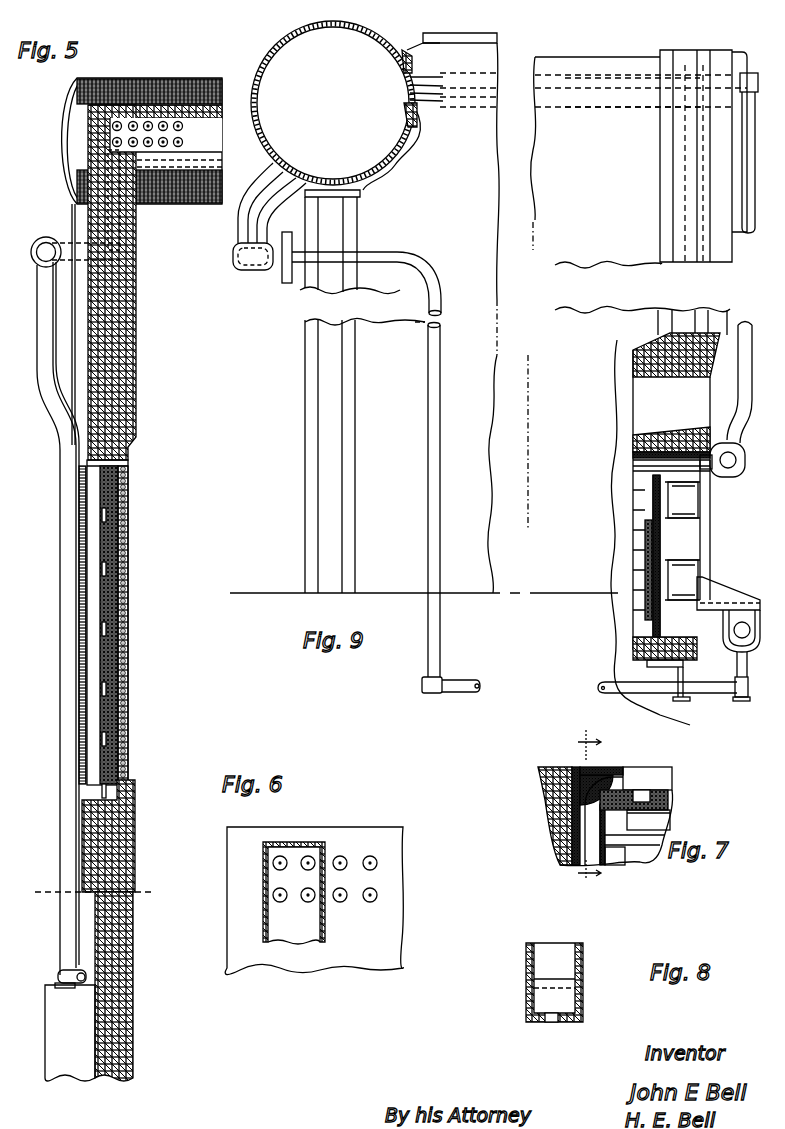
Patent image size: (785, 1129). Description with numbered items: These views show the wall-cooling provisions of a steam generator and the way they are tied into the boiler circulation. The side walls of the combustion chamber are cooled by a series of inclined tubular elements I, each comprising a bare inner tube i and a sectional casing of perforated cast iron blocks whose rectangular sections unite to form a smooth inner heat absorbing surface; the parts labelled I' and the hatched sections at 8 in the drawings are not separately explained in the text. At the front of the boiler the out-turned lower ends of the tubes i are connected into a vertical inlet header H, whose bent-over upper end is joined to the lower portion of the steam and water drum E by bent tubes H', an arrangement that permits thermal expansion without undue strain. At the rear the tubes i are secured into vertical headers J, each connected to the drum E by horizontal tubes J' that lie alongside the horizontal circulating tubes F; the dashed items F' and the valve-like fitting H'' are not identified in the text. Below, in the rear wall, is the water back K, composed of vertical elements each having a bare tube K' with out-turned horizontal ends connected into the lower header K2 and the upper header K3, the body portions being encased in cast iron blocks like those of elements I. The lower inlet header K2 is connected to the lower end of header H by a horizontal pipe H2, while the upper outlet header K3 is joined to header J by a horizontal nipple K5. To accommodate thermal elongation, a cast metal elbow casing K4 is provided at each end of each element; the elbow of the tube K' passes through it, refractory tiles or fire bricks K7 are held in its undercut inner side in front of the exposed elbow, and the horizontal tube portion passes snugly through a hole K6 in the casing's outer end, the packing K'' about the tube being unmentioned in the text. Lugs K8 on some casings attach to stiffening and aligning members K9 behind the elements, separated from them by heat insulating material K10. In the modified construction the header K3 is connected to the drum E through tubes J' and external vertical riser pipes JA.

In FIG. 9, the steam and water drum E is at (333, 103).
In FIG. 6, the steam and water drum E is at (356, 827).
In FIG. 6, the horizontal circulating tubes F is at (355, 867).
In FIG. 5, the tube holes F' is at (180, 96).
In FIG. 9, the tube holes F' is at (632, 133).
In FIG. 6, the vertical header J is at (277, 894).
In FIG. 5, the horizontal tubes J' is at (71, 136).
In FIG. 9, the horizontal tubes J' is at (632, 113).
In FIG. 6, the horizontal tubes J' is at (271, 879).
In FIG. 5, the vertical inlet header H is at (50, 606).
In FIG. 9, the vertical inlet header H is at (451, 508).
In FIG. 5, the tubes H' is at (112, 297).
In FIG. 9, the valve H'' is at (232, 258).
In FIG. 5, the horizontal pipe H2 is at (58, 975).
In FIG. 9, the horizontal pipe H2 is at (714, 696).
In FIG. 5, the tubular elements I is at (128, 629).
In FIG. 5, the grid strip I' is at (48, 625).
In FIG. 5, the inner tube i is at (124, 536).
In FIG. 7, the inner tube i is at (612, 770).
In FIG. 9, the external vertical riser pipes JA is at (733, 412).
In FIG. 9, the water back K is at (644, 563).
In FIG. 7, the water back K is at (647, 765).
In FIG. 7, the bare tube K' is at (542, 816).
In FIG. 7, the packing K'' is at (557, 820).
In FIG. 9, the lower horizontal header K2 is at (735, 645).
In FIG. 9, the upper horizontal header K3 is at (728, 470).
In FIG. 7, the cast metal elbow casing K4 is at (572, 768).
In FIG. 8, the cast metal elbow casing K4 is at (583, 988).
In FIG. 8, the horizontal nipple or pipe connection K5 is at (557, 1022).
In FIG. 8, the hole K6 is at (554, 968).
In FIG. 7, the refractory material K7 is at (598, 767).
In FIG. 7, the lugs K8 is at (668, 800).
In FIG. 7, the stiffening and aligning metallic members K9 is at (668, 820).
In FIG. 7, the heat insulating material K10 is at (645, 798).
In FIG. 7, the section line 8- 8 is at (592, 802).